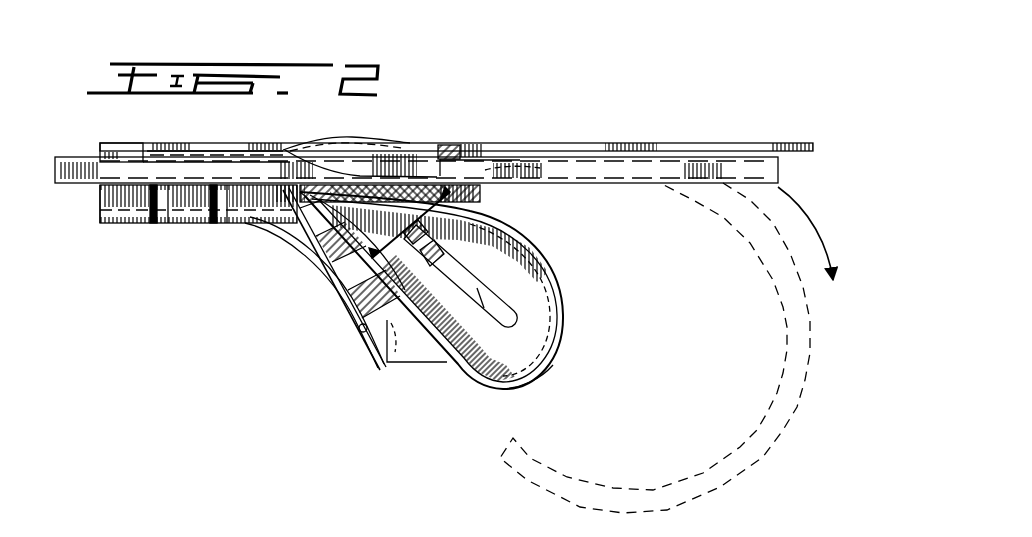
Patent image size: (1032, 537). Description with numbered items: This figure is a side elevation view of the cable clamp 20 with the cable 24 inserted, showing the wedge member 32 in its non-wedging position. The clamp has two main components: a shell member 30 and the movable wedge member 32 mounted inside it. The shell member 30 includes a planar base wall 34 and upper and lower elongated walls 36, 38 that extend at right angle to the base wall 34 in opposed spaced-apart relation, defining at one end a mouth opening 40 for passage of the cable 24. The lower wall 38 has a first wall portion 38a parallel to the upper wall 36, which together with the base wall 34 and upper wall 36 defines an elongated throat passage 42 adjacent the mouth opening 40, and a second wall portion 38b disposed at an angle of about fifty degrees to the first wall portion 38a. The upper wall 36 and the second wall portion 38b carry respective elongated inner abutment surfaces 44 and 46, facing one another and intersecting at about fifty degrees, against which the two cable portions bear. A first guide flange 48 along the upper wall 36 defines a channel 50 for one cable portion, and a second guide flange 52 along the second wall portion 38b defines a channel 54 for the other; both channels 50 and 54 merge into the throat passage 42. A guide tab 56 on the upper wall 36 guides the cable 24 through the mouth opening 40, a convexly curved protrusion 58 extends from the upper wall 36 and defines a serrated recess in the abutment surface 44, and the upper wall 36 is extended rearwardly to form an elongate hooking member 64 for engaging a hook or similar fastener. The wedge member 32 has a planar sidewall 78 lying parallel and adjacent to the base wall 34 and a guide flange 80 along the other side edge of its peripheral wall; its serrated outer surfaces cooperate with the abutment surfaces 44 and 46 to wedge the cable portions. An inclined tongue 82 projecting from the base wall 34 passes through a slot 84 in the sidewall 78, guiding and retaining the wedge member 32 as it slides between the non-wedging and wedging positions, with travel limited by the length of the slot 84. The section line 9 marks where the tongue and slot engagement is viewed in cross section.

The cable clamp 20 is at (740, 87).
The cable 24 is at (77, 153).
The shell member 30 is at (665, 143).
The wedge member 32 is at (568, 316).
The base wall 34 is at (257, 210).
The upper wall 36 is at (226, 145).
The lower wall 38 is at (140, 223).
The first wall portion 38a is at (177, 224).
The second wall portion 38b is at (313, 273).
The mouth opening 40 is at (102, 198).
The throat passage 42 is at (190, 208).
The inner abutment surface 44 is at (456, 160).
The inner abutment surface 46 is at (370, 330).
The first guide flange 48 is at (416, 160).
The channel 50 is at (494, 157).
The second guide flange 52 is at (307, 277).
The channel 54 is at (385, 350).
The guide tab 56 is at (132, 150).
The convexly curved protrusion 58 is at (362, 137).
The hooking member 64 is at (750, 144).
The sidewall 78 is at (517, 347).
The guide flange 80 is at (545, 238).
The tongue 82 is at (426, 236).
The slot 84 is at (510, 318).
The section line 9- 9 is at (470, 199).